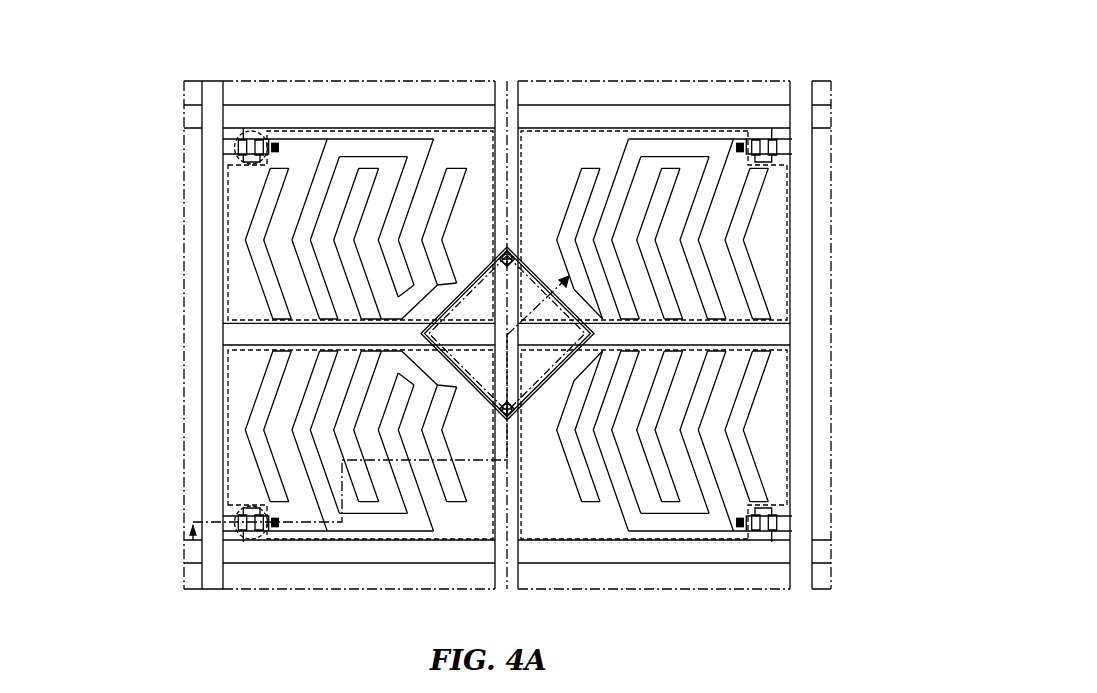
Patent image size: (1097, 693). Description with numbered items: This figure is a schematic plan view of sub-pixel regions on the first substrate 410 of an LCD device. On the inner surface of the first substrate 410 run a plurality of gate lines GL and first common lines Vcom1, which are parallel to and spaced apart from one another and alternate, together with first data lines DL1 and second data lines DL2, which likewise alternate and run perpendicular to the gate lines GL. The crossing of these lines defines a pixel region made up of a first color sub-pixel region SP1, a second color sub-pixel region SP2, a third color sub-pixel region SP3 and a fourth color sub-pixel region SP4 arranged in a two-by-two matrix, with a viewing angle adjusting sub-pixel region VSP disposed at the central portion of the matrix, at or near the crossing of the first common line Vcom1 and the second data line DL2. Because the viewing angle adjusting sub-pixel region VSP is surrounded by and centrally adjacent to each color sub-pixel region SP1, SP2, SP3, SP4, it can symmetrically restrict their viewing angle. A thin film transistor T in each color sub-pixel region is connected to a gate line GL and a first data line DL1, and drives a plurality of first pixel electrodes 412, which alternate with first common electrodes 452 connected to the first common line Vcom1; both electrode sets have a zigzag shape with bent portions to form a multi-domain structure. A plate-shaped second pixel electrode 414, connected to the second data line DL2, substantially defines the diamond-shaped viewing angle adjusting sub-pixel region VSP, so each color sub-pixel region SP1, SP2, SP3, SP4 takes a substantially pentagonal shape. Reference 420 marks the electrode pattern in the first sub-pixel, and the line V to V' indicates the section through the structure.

The first substrate 410 is at (856, 150).
The first pixel electrode 412 is at (312, 275).
The second pixel electrode 414 is at (534, 385).
The pixel electrode 420 is at (291, 180).
The first common electrode 452 is at (344, 240).
The first data line DL1 is at (213, 88).
The second data line DL2 is at (510, 88).
The gate line GL is at (190, 118).
The thin film transistor T is at (236, 148).
The first color sub-pixel region SP1 is at (303, 180).
The second color sub-pixel region SP2 is at (792, 207).
The third color sub-pixel region SP3 is at (792, 440).
The fourth color sub-pixel region SP4 is at (230, 440).
The first common line Vcom1 is at (190, 340).
The viewing angle adjusting sub-pixel region VSP is at (490, 398).
The section line V is at (346, 450).
The section line V' is at (549, 305).